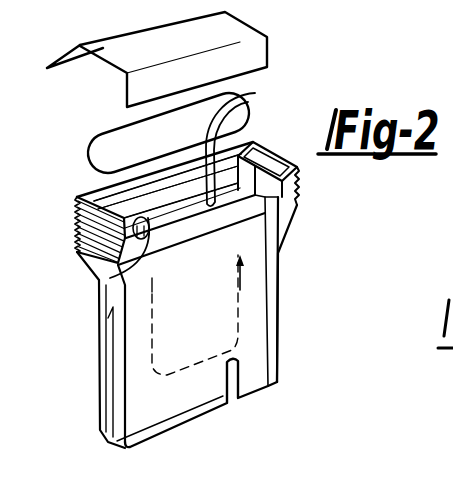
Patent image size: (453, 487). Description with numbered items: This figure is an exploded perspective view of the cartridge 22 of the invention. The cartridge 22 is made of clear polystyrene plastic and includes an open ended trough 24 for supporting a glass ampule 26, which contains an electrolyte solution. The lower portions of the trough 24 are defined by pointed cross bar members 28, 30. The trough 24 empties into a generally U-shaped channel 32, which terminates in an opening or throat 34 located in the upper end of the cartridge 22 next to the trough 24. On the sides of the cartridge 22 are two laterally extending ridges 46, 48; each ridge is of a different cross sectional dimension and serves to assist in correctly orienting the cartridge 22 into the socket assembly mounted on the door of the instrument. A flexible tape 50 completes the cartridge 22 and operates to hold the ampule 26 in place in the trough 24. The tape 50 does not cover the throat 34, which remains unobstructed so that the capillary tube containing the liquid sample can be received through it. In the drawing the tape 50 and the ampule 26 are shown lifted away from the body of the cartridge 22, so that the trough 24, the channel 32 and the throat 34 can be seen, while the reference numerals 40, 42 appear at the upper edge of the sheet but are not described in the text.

The cartridge 22 is at (266, 327).
The open ended trough 24 is at (133, 202).
The glass ampule 26 is at (95, 133).
The pointed cross bar member 28 is at (103, 277).
The pointed cross bar member 30 is at (244, 103).
The U-shaped channel 32 is at (118, 0).
The throat 34 is at (266, 152).
The cap 40 is at (237, 0).
The plate 42 is at (50, 7).
The laterally extending ridge 46 is at (101, 348).
The laterally extending ridge 48 is at (279, 256).
The flexible tape 50 is at (80, 47).